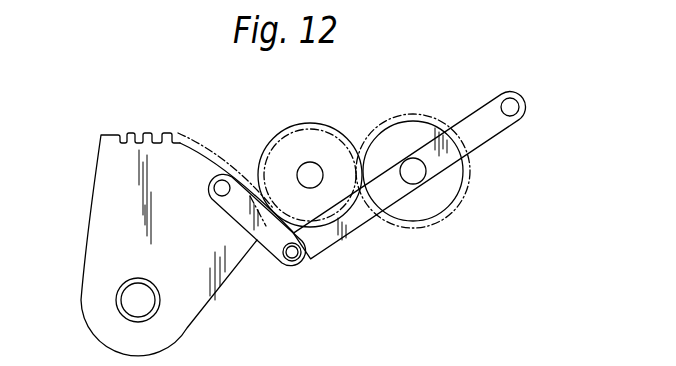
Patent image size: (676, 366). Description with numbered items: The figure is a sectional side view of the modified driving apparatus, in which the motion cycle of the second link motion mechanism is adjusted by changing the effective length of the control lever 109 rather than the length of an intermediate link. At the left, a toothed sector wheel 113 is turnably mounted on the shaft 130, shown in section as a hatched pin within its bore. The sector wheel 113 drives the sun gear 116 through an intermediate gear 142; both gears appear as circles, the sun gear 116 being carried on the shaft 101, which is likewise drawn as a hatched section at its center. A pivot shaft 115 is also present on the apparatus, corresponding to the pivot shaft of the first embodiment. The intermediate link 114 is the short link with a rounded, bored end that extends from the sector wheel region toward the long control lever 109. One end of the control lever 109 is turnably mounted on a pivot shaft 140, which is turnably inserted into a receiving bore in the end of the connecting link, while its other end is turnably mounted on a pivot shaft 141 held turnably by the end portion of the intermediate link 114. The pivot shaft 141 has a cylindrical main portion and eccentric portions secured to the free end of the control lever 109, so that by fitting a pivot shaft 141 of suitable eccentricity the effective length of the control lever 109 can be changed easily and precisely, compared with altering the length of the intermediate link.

The shaft 101 is at (424, 183).
The control lever 109 is at (350, 232).
The sector wheel 113 is at (92, 243).
The intermediate link 114 is at (235, 216).
The pivot shaft 115 is at (216, 162).
The sun gear 116 is at (402, 128).
The shaft 130 is at (121, 311).
The pivot shaft 140 is at (522, 107).
The pivot shaft 141 is at (296, 261).
The intermediate gear 142 is at (305, 123).